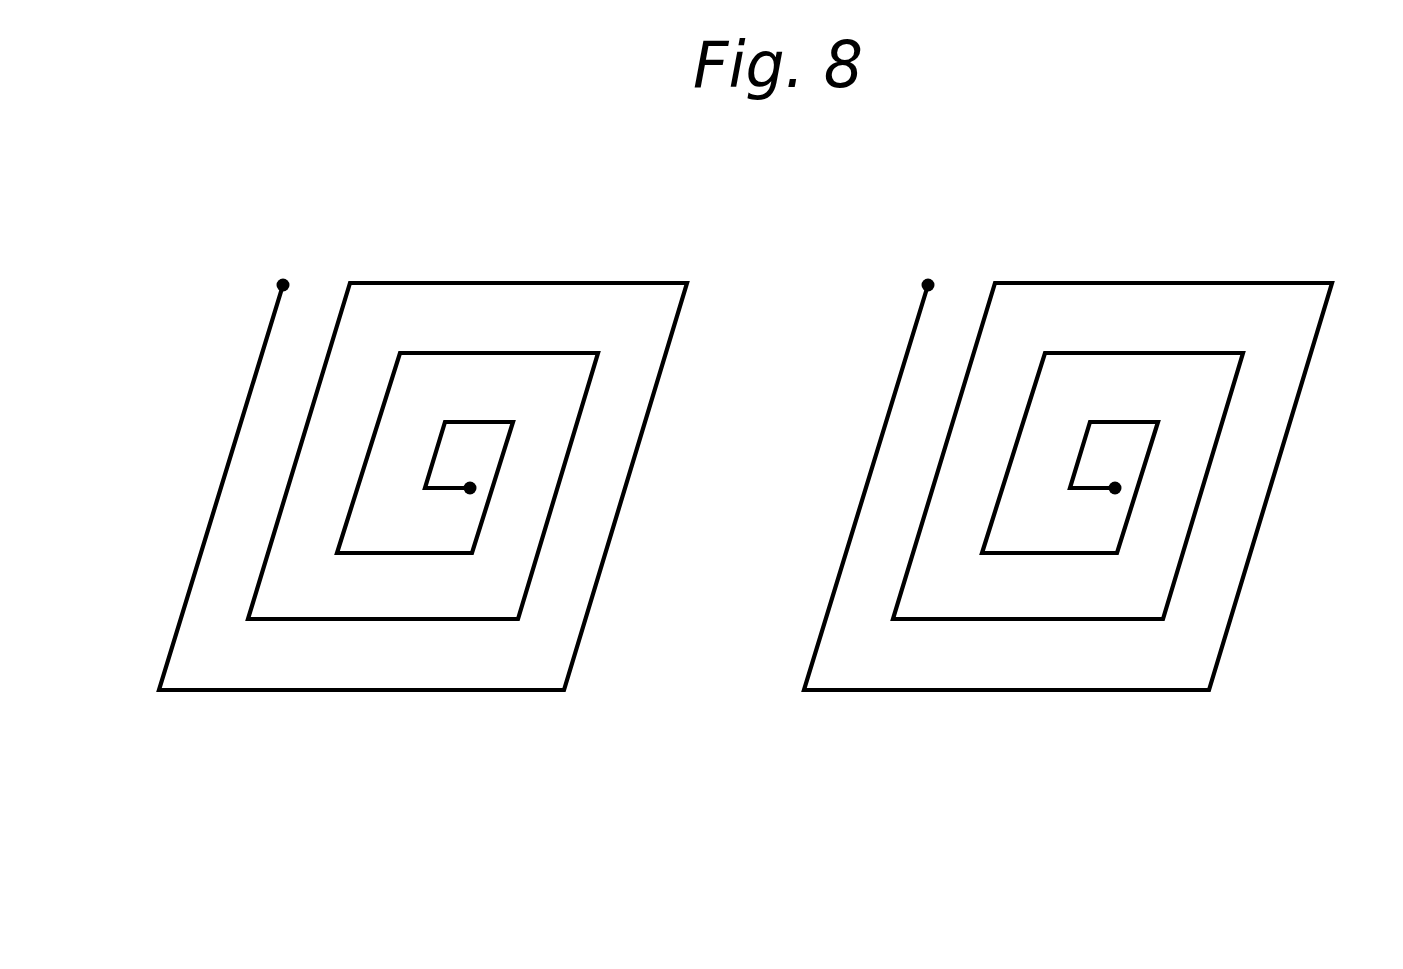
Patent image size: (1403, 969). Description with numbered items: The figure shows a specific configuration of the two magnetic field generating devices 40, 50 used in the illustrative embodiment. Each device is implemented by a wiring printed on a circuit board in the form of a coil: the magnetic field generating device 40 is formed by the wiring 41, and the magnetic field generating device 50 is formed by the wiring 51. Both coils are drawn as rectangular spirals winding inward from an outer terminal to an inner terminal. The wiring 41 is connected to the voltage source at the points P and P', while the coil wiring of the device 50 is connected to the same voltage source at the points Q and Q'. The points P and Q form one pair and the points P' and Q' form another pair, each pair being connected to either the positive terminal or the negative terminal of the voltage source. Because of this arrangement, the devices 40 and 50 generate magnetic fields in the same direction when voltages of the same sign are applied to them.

The magnetic field generating device 40 is at (1095, 526).
The wiring 41 is at (1095, 486).
The magnetic field generating device 50 is at (450, 526).
The wiring 51 is at (645, 428).
The point P is at (977, 224).
The point P' is at (1165, 344).
The point Q is at (335, 224).
The point Q' is at (523, 344).